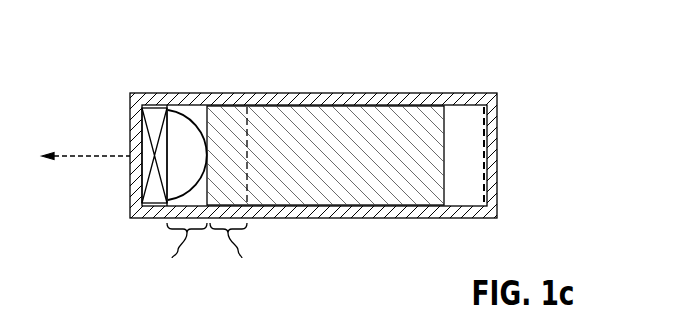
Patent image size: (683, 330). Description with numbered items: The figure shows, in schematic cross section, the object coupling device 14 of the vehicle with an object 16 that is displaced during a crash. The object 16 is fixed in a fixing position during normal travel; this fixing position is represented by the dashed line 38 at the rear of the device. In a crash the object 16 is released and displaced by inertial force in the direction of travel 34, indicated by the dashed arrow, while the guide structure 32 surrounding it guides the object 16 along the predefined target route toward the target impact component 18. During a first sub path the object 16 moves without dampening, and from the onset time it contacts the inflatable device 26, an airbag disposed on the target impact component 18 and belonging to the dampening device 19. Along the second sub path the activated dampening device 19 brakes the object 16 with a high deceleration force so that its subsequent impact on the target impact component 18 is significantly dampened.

The object coupling device 14 is at (140, 236).
The object 16 is at (329, 187).
The target impact component 18 is at (137, 153).
The dampening device 19 is at (165, 77).
The inflatable device 26 is at (185, 125).
The guide structure 32 is at (392, 212).
The direction of travel 34 is at (80, 157).
The dashed line 38 is at (484, 122).